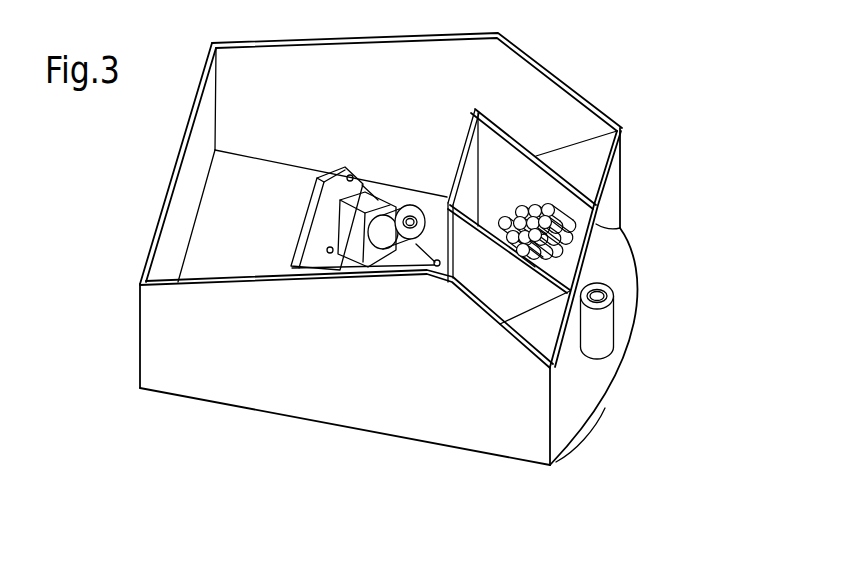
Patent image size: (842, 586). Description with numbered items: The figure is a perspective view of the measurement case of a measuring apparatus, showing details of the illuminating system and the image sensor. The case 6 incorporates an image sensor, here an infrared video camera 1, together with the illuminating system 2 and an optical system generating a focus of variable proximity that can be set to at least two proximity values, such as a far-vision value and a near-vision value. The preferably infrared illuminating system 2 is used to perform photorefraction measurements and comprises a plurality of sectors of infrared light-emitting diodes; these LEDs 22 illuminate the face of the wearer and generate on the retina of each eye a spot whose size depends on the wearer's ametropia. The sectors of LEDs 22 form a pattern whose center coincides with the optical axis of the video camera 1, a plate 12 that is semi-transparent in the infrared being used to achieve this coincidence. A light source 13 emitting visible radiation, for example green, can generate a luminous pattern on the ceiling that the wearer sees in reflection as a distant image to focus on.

The infrared video camera 1 is at (360, 174).
The illuminating system 2 is at (580, 212).
The case 6 is at (178, 163).
The plate 12 is at (466, 136).
The light source 13 is at (603, 322).
The LEDs 22 is at (506, 206).